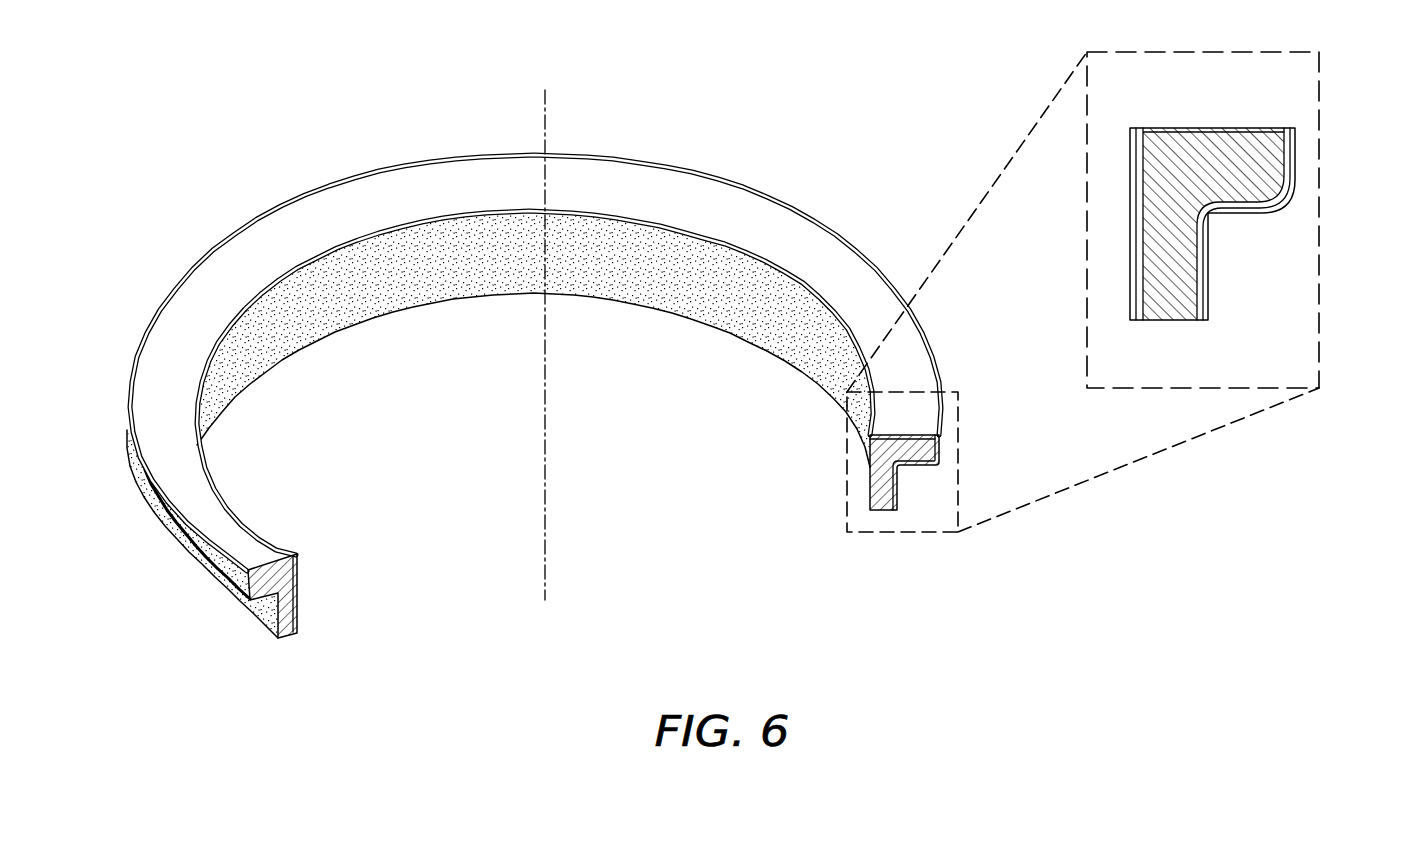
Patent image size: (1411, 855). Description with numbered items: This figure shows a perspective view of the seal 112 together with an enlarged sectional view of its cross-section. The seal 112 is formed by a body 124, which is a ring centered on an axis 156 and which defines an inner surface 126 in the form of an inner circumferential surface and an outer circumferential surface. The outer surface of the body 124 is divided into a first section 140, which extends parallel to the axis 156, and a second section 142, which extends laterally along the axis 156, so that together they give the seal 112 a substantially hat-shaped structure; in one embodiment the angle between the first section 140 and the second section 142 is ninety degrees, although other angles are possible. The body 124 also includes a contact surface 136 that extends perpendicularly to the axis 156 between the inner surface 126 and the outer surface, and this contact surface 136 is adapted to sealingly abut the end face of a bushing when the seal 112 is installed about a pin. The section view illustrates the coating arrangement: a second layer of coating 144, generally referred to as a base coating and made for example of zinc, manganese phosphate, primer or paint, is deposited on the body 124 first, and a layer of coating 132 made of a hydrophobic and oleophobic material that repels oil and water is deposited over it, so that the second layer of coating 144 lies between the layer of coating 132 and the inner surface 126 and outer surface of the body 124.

The seal 112 is at (725, 376).
The body 124 is at (363, 217).
The inner surface 126 is at (712, 293).
The layer of coating 132 is at (783, 313).
The contact surface 136 is at (823, 253).
The first section 140 is at (253, 607).
The second section 142 is at (173, 527).
The second layer of coating 144 is at (1199, 270).
The axis 156 is at (547, 113).